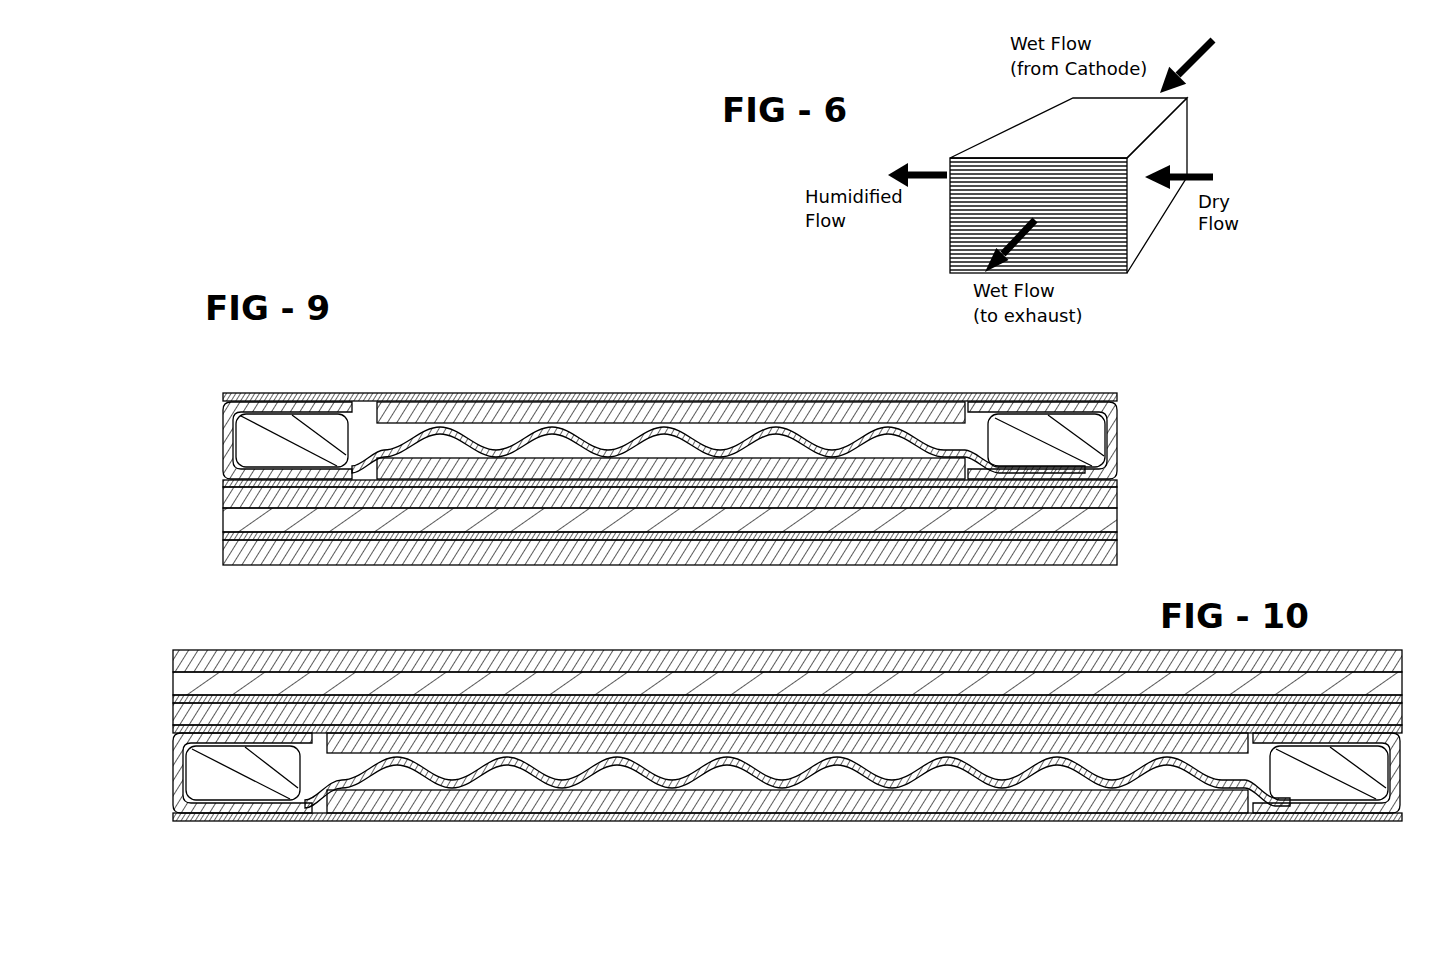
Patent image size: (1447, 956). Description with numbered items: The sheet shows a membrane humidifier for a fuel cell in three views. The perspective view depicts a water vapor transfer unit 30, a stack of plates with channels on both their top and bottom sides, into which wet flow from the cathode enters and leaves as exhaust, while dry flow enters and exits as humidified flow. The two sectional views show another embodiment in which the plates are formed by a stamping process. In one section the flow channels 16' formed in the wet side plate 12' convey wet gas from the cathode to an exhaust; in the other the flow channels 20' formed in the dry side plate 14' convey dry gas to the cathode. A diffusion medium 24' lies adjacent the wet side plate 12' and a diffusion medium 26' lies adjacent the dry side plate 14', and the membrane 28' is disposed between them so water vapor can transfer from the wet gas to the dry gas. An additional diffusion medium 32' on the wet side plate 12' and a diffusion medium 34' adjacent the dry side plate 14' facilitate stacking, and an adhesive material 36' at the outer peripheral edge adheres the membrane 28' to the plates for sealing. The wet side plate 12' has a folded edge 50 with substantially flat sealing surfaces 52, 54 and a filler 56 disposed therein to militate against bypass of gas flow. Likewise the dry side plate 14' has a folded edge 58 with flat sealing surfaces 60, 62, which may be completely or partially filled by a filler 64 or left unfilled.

In FIG. 6, the water vapor transfer (WVT) unit 30 is at (992, 108).
In FIG. 9, the wet side plate 12' is at (1159, 425).
In FIG. 10, the wet side plate 12' is at (1374, 622).
In FIG. 9, the dry side plate 14' is at (1159, 512).
In FIG. 10, the dry side plate 14' is at (1367, 827).
In FIG. 9, the flow channels 16' is at (718, 412).
In FIG. 10, the flow channels 20' is at (797, 807).
In FIG. 9, the diffusion medium 24' is at (670, 531).
In FIG. 10, the diffusion medium 24' is at (787, 668).
In FIG. 9, the diffusion medium 26' is at (670, 549).
In FIG. 10, the diffusion medium 26' is at (787, 764).
In FIG. 9, the membrane 28' is at (671, 528).
In FIG. 10, the membrane 28' is at (327, 838).
In FIG. 9, the diffusion medium 32' is at (671, 387).
In FIG. 10, the diffusion medium 32' is at (787, 644).
In FIG. 9, the diffusion medium 34' is at (670, 571).
In FIG. 10, the diffusion medium 34' is at (787, 824).
In FIG. 9, the adhesive material 36' is at (210, 454).
In FIG. 10, the adhesive material 36' is at (747, 679).
In FIG. 9, the folded edge 50 is at (223, 425).
In FIG. 9, the sealing surface 52 is at (272, 395).
In FIG. 9, the sealing surface 54 is at (272, 487).
In FIG. 9, the filler 56 is at (301, 414).
In FIG. 10, the folded edge 58 is at (173, 757).
In FIG. 10, the sealing surface 60 is at (225, 733).
In FIG. 10, the sealing surface 62 is at (227, 827).
In FIG. 10, the filler 64 is at (245, 787).